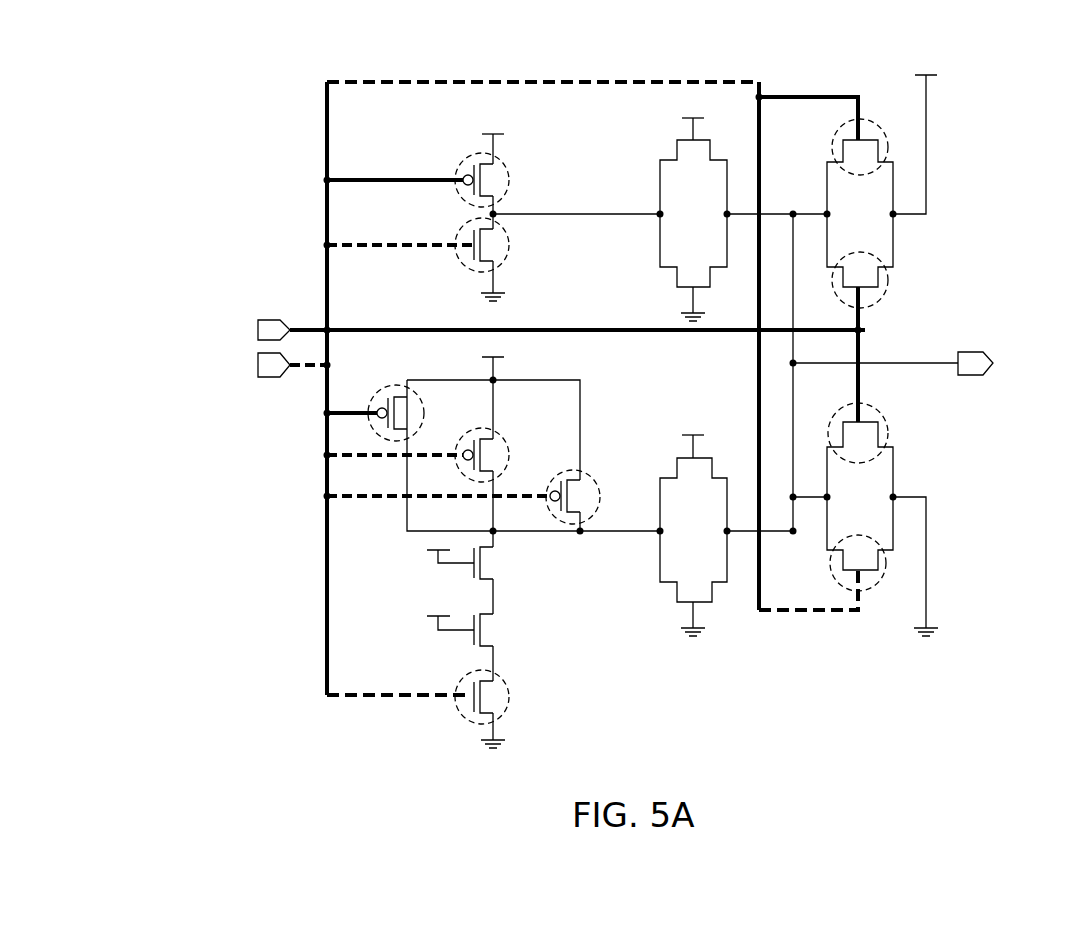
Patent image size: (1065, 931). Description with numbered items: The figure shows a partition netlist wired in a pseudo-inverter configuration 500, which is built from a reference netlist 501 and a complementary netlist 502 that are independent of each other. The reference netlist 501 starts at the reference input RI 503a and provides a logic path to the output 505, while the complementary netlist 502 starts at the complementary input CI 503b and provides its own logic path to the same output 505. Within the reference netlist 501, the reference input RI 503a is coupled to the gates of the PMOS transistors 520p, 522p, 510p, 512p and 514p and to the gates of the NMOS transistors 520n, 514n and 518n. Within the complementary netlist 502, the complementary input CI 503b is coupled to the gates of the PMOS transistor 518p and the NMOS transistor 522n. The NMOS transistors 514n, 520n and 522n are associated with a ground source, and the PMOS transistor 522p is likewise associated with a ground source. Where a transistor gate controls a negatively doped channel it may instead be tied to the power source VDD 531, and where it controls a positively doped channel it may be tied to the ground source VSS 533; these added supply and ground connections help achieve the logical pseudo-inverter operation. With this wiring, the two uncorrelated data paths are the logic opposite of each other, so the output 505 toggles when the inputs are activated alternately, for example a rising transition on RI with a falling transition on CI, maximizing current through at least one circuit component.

The pseudo-inverter configuration 500 is at (250, 86).
The reference netlist 501 is at (505, 84).
The complementary netlist 502 is at (577, 327).
The reference input RI 503a is at (275, 378).
The complementary input CI 503b is at (275, 318).
The output 505 is at (975, 352).
The PMOS transistor 510p is at (372, 405).
The PMOS transistor 512p is at (460, 428).
The PMOS transistor 514p is at (617, 447).
The NMOS transistor 514n is at (467, 672).
The PMOS transistor 518p is at (832, 148).
The NMOS transistor 518n is at (882, 287).
The PMOS transistor 520p is at (458, 168).
The NMOS transistor 520n is at (463, 254).
The PMOS transistor 522p is at (903, 397).
The NMOS transistor 522n is at (838, 575).
The power source VDD 531 is at (432, 548).
The ground source VSS 533 is at (692, 117).